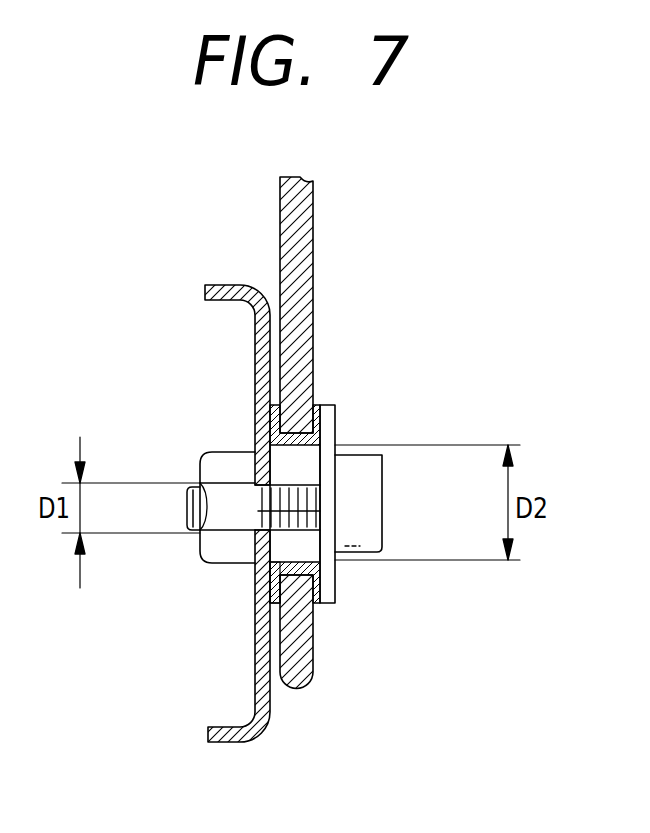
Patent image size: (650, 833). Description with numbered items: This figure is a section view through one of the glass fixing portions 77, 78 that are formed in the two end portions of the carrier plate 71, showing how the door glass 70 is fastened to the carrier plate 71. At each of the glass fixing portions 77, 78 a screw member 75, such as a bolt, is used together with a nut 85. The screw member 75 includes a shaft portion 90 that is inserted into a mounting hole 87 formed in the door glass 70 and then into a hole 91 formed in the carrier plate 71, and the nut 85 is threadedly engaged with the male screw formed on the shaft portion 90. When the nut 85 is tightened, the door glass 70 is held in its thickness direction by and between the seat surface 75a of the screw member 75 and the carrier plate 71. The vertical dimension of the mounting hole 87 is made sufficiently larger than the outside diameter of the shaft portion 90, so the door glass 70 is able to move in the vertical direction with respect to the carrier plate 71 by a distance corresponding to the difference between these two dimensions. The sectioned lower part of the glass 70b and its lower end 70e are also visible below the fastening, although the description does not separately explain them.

The door glass 70 is at (313, 240).
The lower plate portion 70b is at (315, 641).
The plate end 70e is at (304, 689).
The carrier plate 71 is at (257, 383).
The screw member 75 is at (372, 528).
The seat surface 75a is at (332, 425).
The glass fixing portion 77 is at (319, 463).
The glass fixing portion 78 is at (382, 334).
The nut 85 is at (220, 463).
The mounting hole 87 is at (268, 597).
The shaft portion 90 is at (298, 484).
The hole 91 is at (262, 516).